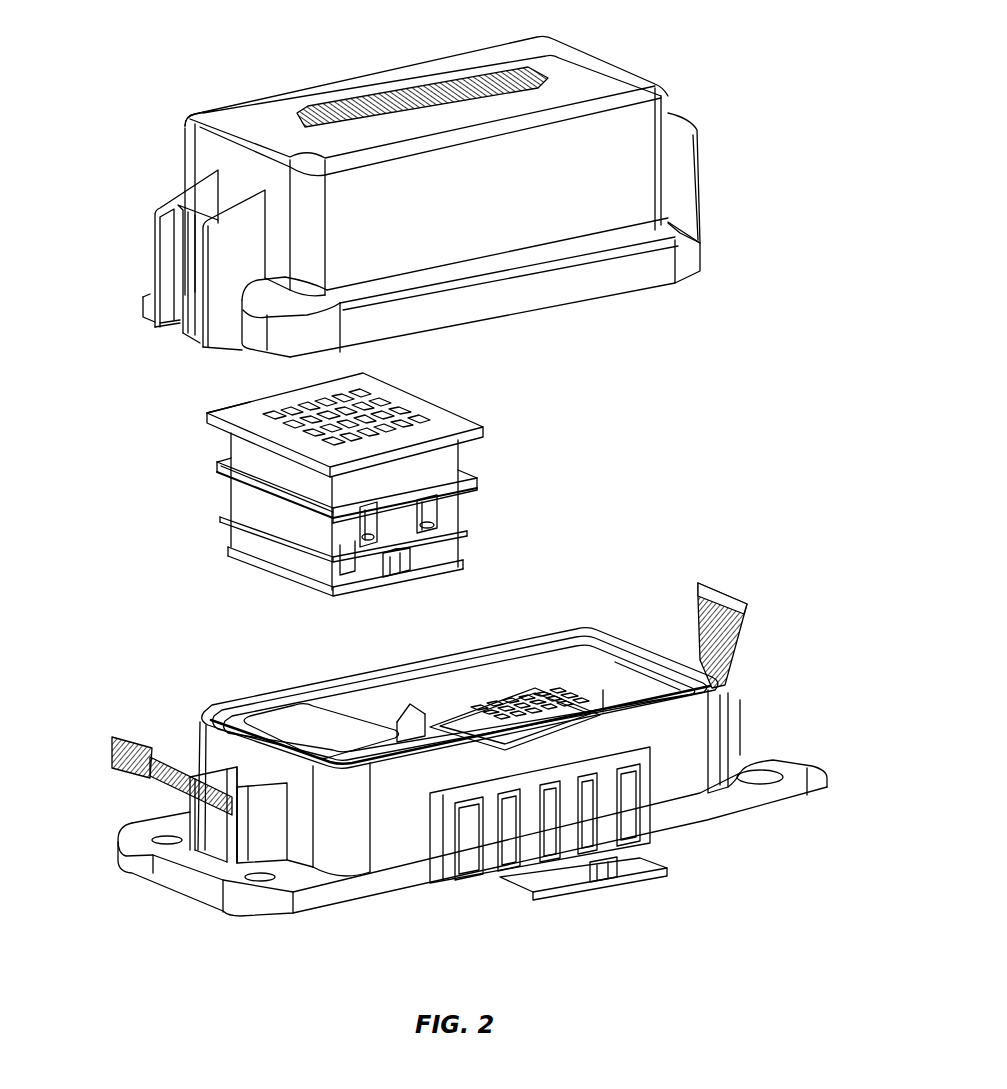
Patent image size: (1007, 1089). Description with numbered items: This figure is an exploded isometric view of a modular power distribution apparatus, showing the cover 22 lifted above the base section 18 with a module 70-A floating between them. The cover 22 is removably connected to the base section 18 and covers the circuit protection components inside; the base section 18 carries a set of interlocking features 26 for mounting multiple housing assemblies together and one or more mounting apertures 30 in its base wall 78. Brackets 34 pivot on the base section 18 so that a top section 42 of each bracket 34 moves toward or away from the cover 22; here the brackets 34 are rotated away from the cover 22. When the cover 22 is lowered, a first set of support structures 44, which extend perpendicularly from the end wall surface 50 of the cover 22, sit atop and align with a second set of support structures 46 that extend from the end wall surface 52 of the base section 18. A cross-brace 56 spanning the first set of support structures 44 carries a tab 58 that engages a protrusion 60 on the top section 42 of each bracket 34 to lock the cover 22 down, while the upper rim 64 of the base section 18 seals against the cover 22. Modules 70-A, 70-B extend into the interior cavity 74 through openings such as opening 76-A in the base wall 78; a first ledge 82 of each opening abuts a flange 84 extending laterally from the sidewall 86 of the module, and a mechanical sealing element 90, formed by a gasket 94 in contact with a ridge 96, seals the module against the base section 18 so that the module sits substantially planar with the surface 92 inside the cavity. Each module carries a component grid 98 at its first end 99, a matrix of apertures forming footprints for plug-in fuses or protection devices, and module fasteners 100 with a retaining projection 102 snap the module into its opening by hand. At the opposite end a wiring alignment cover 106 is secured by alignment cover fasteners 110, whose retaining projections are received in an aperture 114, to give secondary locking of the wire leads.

The base section 18 is at (703, 818).
The cover 22 is at (374, 85).
The interlocking features 26 is at (490, 872).
The mounting apertures 30 is at (768, 772).
The brackets 34 is at (113, 755).
The top section 42 is at (106, 739).
The first set of support structures 44 is at (163, 190).
The second set of support structures 46 is at (186, 827).
The end wall surface 50 is at (190, 137).
The end wall surface 52 is at (217, 745).
The cross-brace 56 is at (182, 240).
The tab 58 is at (180, 212).
The protrusion 60 is at (745, 598).
The upper rim 64 is at (617, 637).
The module 70-A is at (220, 443).
The module 70-B is at (563, 688).
The interior cavity 74 is at (657, 678).
The opening 76-A is at (347, 750).
The base wall 78 is at (773, 820).
The first ledge 82 is at (363, 730).
The flange 84 is at (483, 427).
The sidewall 86 is at (233, 500).
The mechanical sealing element 90 is at (210, 467).
The surface 92 is at (625, 695).
The gasket 94 is at (227, 518).
The ridge 96 is at (473, 480).
The component grid 98 is at (307, 410).
The first end 99 is at (197, 415).
The module fasteners 100 is at (423, 512).
The retaining projection 102 is at (350, 540).
The wiring alignment cover 106 is at (230, 547).
The alignment cover fasteners 110 is at (393, 567).
The aperture 114 is at (423, 560).